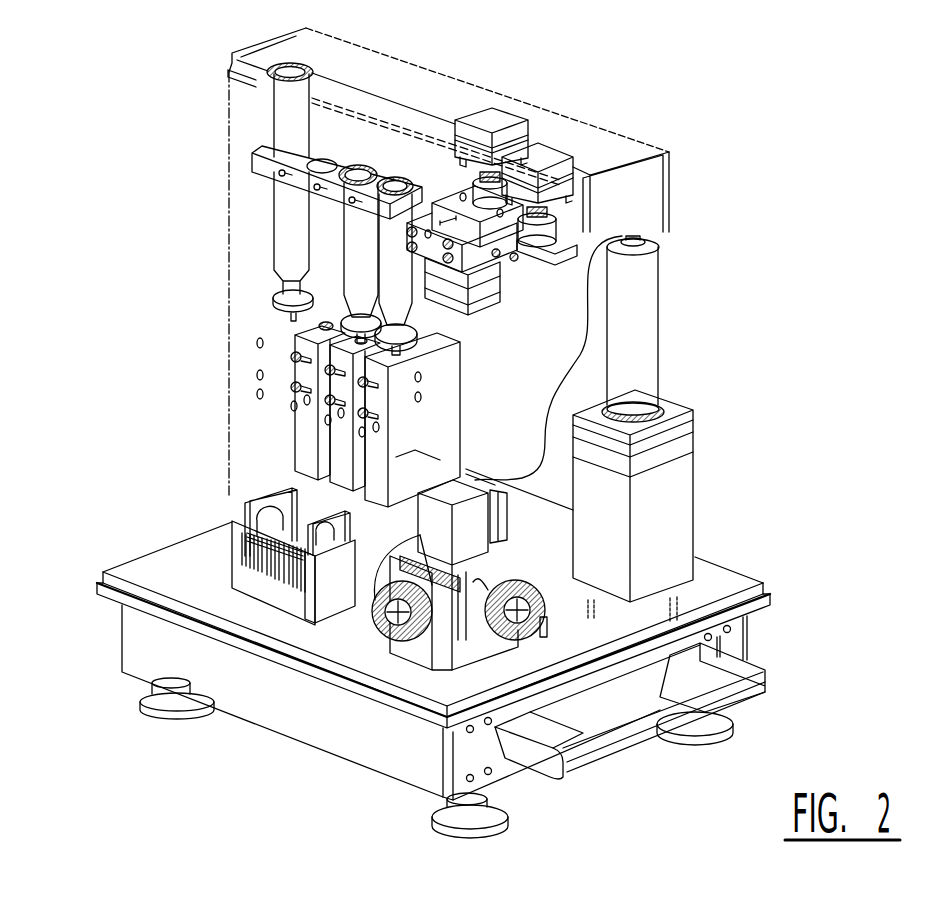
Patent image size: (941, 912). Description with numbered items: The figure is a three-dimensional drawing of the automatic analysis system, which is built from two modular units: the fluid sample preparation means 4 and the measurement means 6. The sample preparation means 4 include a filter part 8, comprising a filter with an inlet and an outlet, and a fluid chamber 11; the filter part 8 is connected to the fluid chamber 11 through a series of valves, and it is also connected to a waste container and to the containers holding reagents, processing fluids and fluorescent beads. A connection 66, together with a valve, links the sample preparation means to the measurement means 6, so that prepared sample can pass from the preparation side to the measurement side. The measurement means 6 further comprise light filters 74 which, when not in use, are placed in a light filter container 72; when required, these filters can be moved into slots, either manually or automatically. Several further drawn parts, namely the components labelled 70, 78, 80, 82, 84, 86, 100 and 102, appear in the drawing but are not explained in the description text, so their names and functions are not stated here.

The sample preparation means 4 is at (777, 473).
The measurement means 6 is at (362, 665).
The filter part 8 is at (420, 145).
The fluid chamber 11 is at (777, 391).
The connection 66 is at (586, 334).
The valve block 70 is at (506, 268).
The light filter container 72 is at (178, 579).
The light filters 74 is at (244, 503).
The housing 78 is at (604, 538).
The cylinder 80 is at (640, 324).
The reagent tube 82 is at (292, 235).
The dispensing units 84 is at (309, 428).
The connector block 86 is at (478, 255).
The tray 100 is at (770, 672).
The feet 102 is at (187, 713).